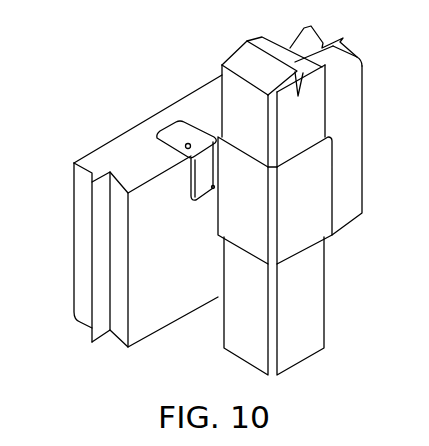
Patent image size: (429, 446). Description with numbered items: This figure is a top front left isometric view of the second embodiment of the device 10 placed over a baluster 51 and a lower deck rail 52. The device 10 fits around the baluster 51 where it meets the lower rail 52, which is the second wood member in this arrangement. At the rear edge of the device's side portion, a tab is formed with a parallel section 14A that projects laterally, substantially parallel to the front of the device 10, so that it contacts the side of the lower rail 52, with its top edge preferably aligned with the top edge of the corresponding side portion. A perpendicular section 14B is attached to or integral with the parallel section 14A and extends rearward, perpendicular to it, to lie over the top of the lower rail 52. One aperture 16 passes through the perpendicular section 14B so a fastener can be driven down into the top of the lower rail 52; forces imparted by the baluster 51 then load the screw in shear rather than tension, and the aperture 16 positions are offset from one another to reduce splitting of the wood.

The device 10 is at (303, 212).
The parallel section 14A is at (201, 187).
The perpendicular section 14B is at (166, 131).
The aperture 16 is at (186, 125).
The baluster 51 is at (298, 342).
The lower rail 52 is at (173, 307).